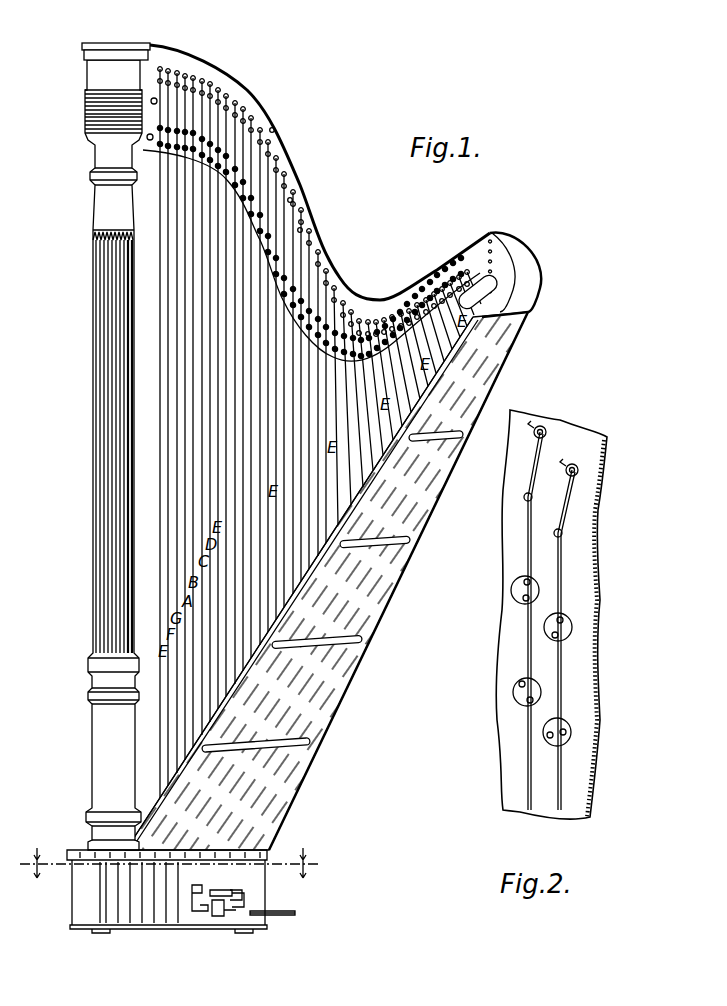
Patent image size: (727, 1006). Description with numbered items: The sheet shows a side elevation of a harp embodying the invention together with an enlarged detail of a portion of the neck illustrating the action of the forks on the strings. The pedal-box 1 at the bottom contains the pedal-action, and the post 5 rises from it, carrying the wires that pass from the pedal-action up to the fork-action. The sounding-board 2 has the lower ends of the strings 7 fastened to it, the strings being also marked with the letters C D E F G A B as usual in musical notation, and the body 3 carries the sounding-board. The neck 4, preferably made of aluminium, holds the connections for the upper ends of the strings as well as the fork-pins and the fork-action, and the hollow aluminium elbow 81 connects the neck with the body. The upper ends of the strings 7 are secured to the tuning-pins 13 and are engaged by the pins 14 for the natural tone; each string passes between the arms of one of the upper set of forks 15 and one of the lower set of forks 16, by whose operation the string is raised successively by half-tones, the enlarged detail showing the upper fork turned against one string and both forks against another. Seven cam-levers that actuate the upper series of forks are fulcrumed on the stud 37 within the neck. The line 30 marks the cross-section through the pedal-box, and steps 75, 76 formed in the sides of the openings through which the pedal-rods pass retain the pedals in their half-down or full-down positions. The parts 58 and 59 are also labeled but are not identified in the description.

In FIG. 1, the pedal-box 1 is at (69, 898).
In FIG. 1, the sounding-board 2 is at (241, 697).
In FIG. 1, the body 3 is at (346, 678).
In FIG. 1, the neck 4 is at (321, 254).
In FIG. 2, the neck 4 is at (601, 562).
In FIG. 1, the post 5 is at (92, 427).
In FIG. 1, the strings 7 is at (156, 284).
In FIG. 2, the strings 7 is at (517, 787).
In FIG. 1, the tuning-pins 13 is at (163, 72).
In FIG. 2, the tuning-pins 13 is at (546, 428).
In FIG. 1, the pins 14 is at (270, 125).
In FIG. 2, the pins 14 is at (520, 490).
In FIG. 1, the upper set of forks 15 is at (194, 142).
In FIG. 2, the upper set of forks 15 is at (518, 598).
In FIG. 1, the lower set of forks 16 is at (213, 122).
In FIG. 2, the lower set of forks 16 is at (511, 697).
In FIG. 1, the section line 30 is at (172, 863).
In FIG. 1, the stud 37 is at (152, 98).
In FIG. 1, the bolt 58 is at (147, 138).
In FIG. 1, the pedal lever 59 is at (207, 903).
In FIG. 1, the step 75 is at (195, 906).
In FIG. 1, the step 76 is at (207, 917).
In FIG. 1, the elbow 81 is at (536, 293).